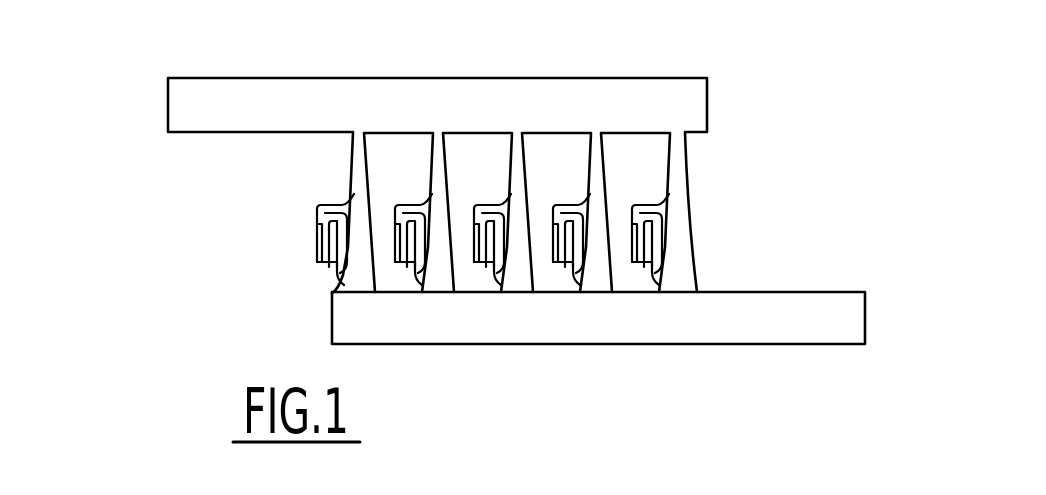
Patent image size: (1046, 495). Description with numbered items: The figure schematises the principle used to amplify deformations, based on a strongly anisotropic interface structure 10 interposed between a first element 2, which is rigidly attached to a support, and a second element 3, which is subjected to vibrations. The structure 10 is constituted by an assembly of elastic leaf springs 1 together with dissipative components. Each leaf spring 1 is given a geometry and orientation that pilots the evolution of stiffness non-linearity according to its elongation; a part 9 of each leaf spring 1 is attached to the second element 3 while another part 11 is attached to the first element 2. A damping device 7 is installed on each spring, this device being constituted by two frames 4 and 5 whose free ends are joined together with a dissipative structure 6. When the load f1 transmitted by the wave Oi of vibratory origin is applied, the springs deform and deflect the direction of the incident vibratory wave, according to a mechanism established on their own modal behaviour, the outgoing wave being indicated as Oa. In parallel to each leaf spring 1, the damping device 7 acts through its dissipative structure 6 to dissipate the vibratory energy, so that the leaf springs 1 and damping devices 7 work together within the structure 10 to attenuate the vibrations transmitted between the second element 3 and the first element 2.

The elastic leaf spring 1 is at (373, 156).
The first element 2 is at (275, 100).
The second element 3 is at (740, 332).
The frame 4 is at (328, 288).
The frame 5 is at (345, 200).
The dissipative structure 6 is at (318, 246).
The damping device 7 is at (305, 262).
The part of leaf spring attached to second element 9 is at (517, 290).
The anisotropic interface structure 10 is at (176, 271).
The part of leaf spring attached to first element 11 is at (515, 126).
The wave of vibratory origin Oi is at (80, 55).
The outgoing wave Oa is at (800, 320).
The load f1 is at (848, 312).